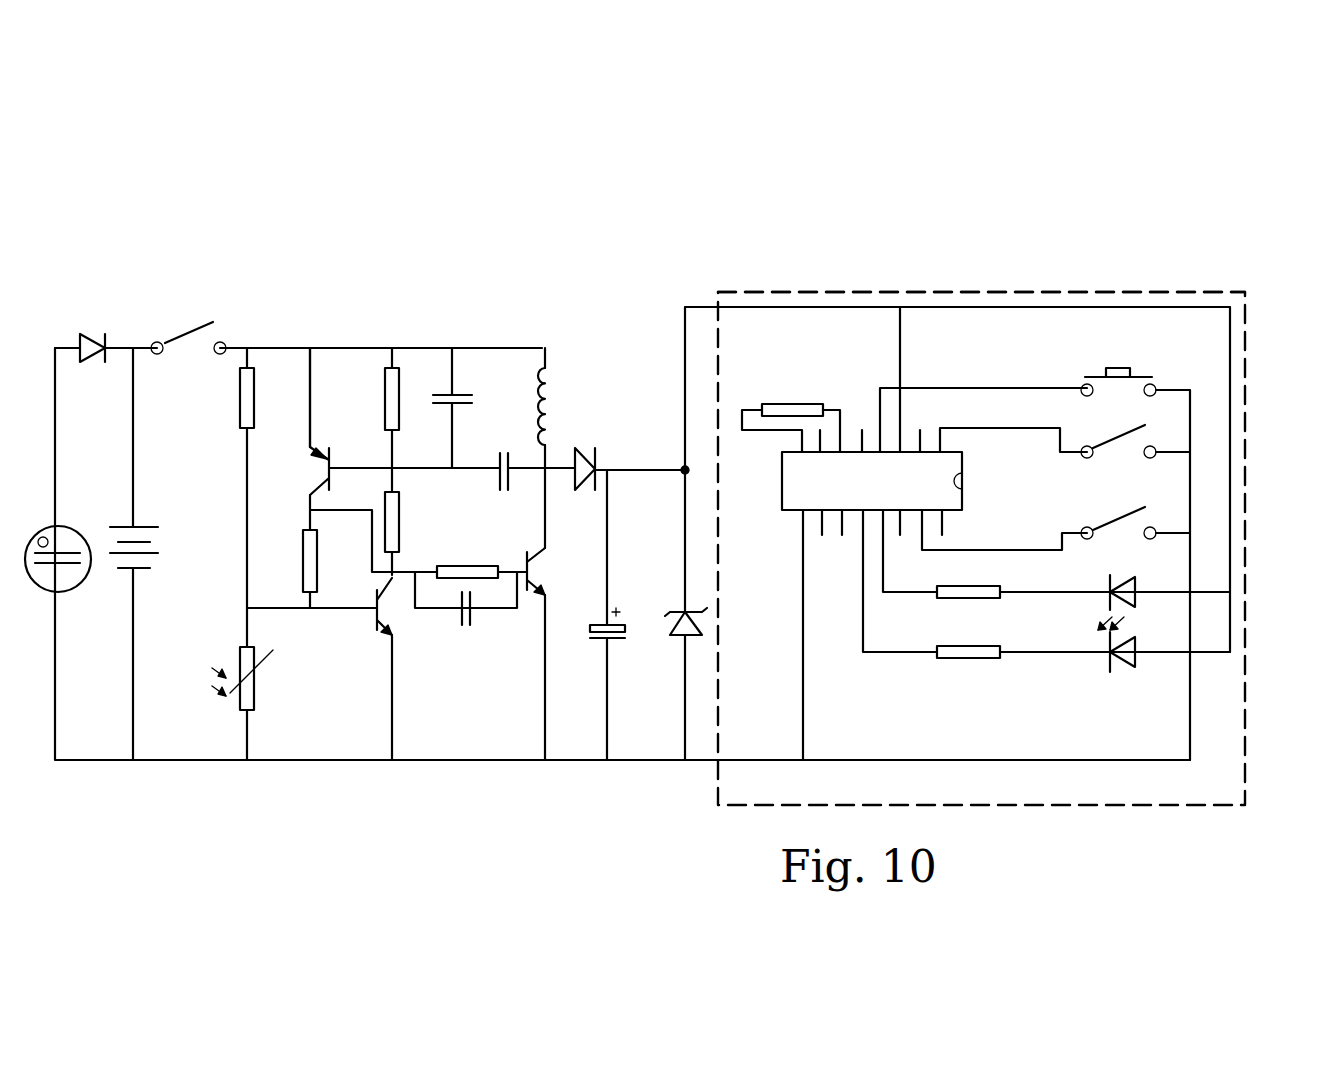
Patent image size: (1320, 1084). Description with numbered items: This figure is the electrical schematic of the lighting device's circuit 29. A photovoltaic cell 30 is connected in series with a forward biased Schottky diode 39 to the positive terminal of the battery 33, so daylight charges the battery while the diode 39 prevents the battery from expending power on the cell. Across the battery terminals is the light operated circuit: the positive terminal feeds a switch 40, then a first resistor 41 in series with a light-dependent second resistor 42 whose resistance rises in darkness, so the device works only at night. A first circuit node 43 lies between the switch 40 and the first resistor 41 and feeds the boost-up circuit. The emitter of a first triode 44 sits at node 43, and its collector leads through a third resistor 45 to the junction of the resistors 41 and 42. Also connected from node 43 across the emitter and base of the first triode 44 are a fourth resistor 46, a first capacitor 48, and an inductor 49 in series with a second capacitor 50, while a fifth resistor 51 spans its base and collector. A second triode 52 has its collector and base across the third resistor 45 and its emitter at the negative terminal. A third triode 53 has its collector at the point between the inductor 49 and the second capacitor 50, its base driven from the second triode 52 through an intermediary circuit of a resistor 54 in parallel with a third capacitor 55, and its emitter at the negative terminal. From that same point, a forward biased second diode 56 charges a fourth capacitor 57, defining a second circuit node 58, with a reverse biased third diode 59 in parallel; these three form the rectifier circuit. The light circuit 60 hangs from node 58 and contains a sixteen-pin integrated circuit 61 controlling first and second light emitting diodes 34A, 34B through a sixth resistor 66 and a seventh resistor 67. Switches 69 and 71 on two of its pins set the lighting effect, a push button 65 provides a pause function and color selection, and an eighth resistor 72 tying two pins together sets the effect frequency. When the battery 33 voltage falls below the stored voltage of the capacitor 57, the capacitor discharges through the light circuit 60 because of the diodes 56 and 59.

The circuit 29 is at (1028, 254).
The solar cell 30 is at (74, 528).
The battery 33 is at (153, 514).
The first light emitting diode 34A is at (1110, 592).
The second light emitting diode 34B is at (1110, 652).
The Schottky diode 39 is at (110, 340).
The switch 40 is at (226, 342).
The first resistor 41 is at (240, 388).
The second, light-dependent resistor 42 is at (241, 648).
The first circuit node 43 is at (318, 347).
The first triode 44 is at (324, 462).
The third resistor 45 is at (303, 562).
The fourth resistor 46 is at (400, 383).
The first capacitor 48 is at (455, 393).
The inductor 49 is at (558, 370).
The second capacitor 50 is at (490, 462).
The fifth resistor 51 is at (400, 518).
The second triode 52 is at (378, 622).
The third triode 53 is at (543, 597).
The fourth resistor 54 is at (487, 565).
The third capacitor 55 is at (470, 614).
The second diode 56 is at (590, 452).
The fourth capacitor 57 is at (590, 633).
The second circuit node 58 is at (608, 473).
The third diode 59 is at (688, 612).
The light circuit 60 is at (1135, 290).
The integrated circuit 61 is at (790, 490).
The push button 65 is at (1150, 376).
The sixth resistor 66 is at (967, 592).
The seventh resistor 67 is at (967, 652).
The switch 69 is at (1083, 448).
The switch 71 is at (1093, 536).
The eighth resistor 72 is at (790, 406).